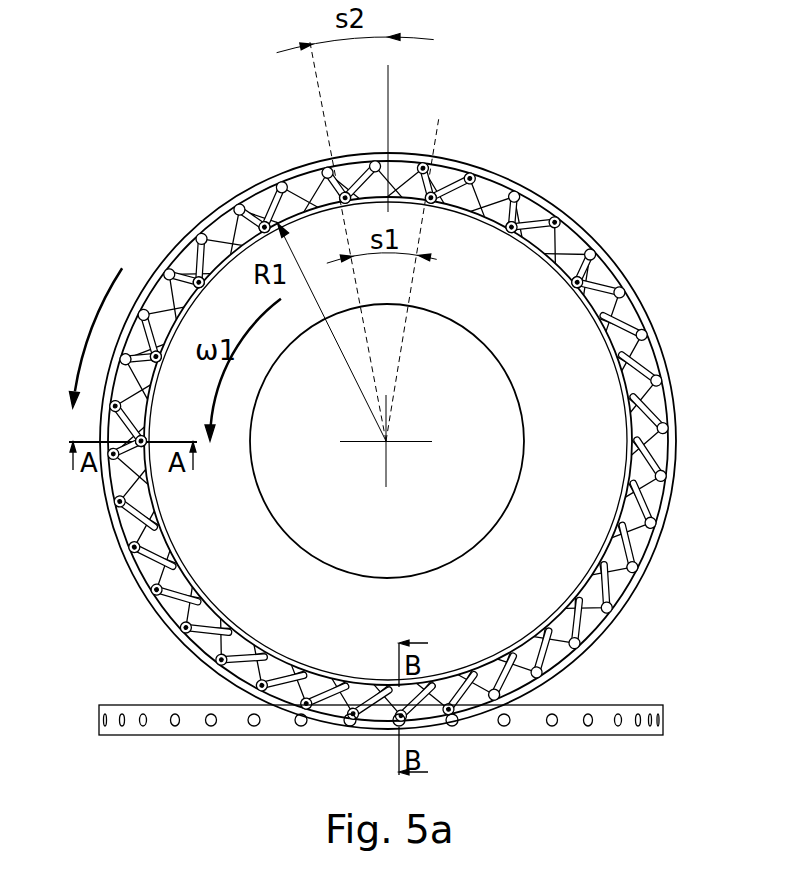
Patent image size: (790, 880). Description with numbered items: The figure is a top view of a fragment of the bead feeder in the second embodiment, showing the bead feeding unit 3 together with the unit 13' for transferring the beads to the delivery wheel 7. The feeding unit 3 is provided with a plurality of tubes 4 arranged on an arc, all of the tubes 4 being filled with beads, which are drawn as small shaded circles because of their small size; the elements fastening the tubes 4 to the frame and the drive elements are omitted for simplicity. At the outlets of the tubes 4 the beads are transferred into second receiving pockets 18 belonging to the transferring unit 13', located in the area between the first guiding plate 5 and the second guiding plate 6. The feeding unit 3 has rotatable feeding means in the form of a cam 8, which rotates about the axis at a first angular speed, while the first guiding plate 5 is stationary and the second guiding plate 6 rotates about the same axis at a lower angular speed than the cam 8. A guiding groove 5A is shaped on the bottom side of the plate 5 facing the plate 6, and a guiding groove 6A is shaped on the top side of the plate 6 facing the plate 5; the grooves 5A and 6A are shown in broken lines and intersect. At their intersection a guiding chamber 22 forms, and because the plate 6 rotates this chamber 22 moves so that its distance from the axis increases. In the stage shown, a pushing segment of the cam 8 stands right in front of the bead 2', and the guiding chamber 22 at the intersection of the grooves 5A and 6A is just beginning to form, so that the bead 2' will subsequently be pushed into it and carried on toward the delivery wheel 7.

The bead feeding unit 3 is at (140, 160).
The unit for transferring the beads to the delivery wheel 13' is at (65, 298).
The tubes 4 is at (153, 357).
The guiding chamber 22 is at (330, 160).
The guiding groove 5A is at (300, 158).
The bead 2' is at (236, 188).
The guiding groove 6A is at (380, 155).
The second receiving pockets 18 is at (385, 185).
The first guiding plate 5 is at (540, 200).
The second guiding plate 6 is at (578, 240).
The cam 8 is at (202, 550).
The delivery wheel 7 is at (197, 733).